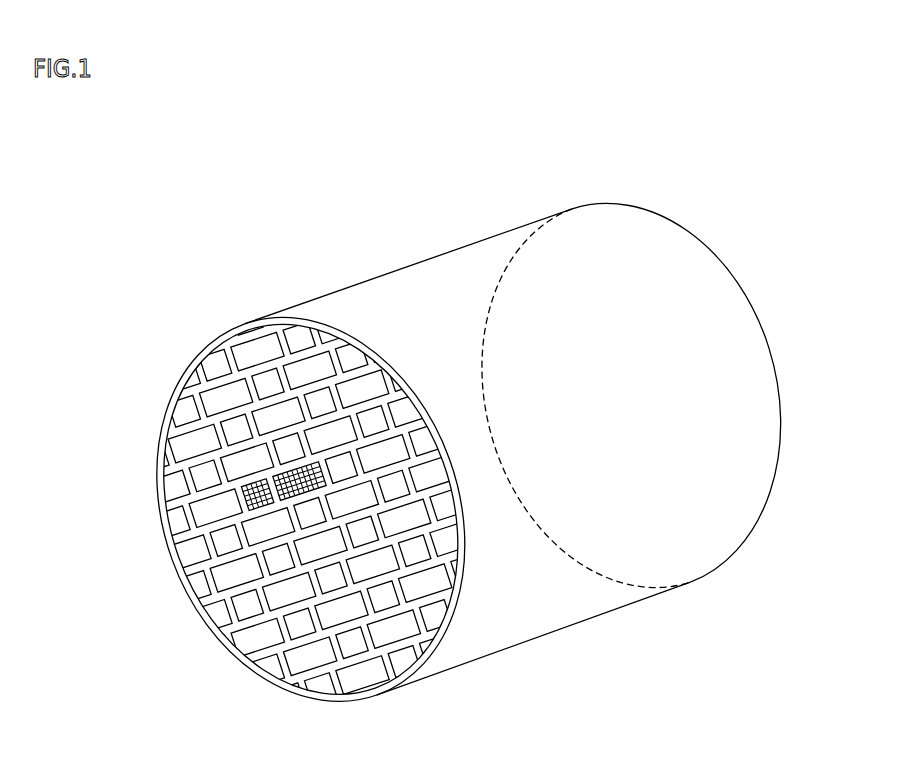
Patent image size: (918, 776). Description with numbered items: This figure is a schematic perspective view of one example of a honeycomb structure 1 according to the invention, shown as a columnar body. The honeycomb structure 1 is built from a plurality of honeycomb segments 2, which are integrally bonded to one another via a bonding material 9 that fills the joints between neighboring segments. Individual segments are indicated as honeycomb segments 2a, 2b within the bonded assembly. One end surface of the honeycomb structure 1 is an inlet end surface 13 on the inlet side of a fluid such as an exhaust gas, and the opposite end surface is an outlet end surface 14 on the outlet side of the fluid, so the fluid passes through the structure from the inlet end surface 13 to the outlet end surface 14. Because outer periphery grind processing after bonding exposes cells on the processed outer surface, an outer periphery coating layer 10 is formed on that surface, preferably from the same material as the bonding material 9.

The honeycomb structure 1 is at (429, 238).
The honeycomb segment 2 is at (189, 415).
The small cell 2a is at (250, 487).
The large cell 2b is at (285, 470).
The bonding material 9 is at (210, 558).
The outer periphery coating layer 10 is at (172, 548).
The inlet end surface 13 is at (313, 530).
The outlet end surface 14 is at (728, 397).